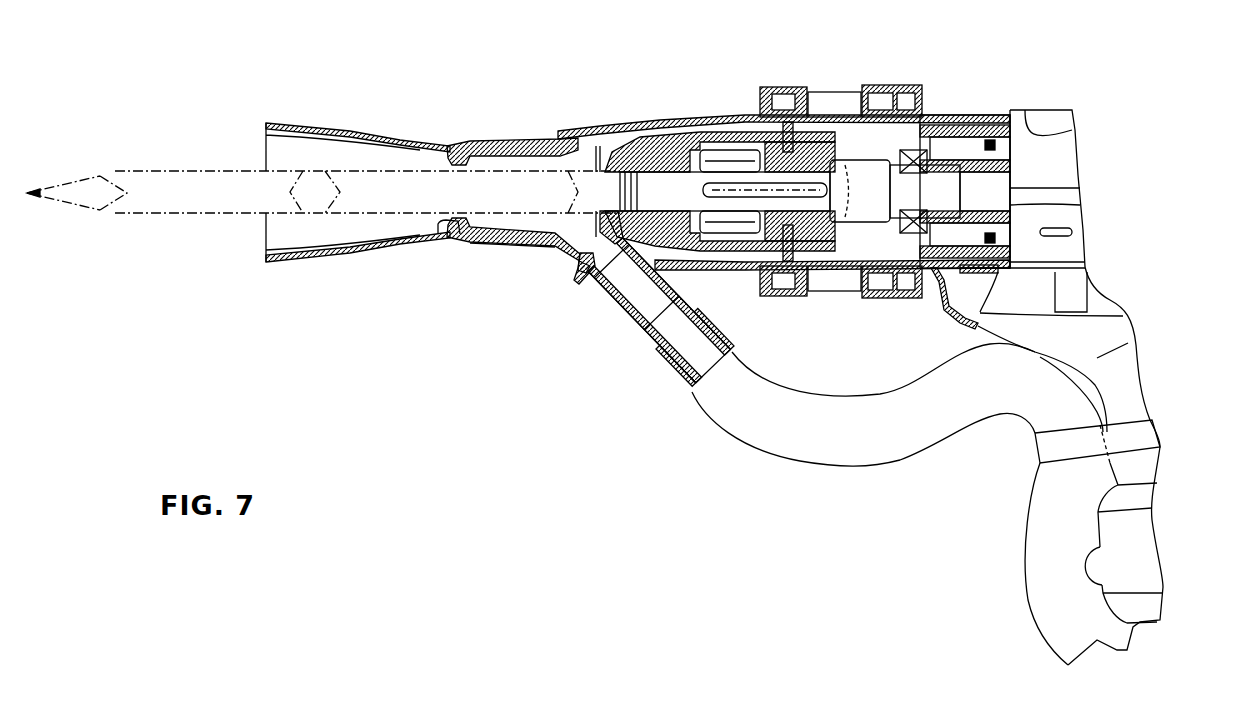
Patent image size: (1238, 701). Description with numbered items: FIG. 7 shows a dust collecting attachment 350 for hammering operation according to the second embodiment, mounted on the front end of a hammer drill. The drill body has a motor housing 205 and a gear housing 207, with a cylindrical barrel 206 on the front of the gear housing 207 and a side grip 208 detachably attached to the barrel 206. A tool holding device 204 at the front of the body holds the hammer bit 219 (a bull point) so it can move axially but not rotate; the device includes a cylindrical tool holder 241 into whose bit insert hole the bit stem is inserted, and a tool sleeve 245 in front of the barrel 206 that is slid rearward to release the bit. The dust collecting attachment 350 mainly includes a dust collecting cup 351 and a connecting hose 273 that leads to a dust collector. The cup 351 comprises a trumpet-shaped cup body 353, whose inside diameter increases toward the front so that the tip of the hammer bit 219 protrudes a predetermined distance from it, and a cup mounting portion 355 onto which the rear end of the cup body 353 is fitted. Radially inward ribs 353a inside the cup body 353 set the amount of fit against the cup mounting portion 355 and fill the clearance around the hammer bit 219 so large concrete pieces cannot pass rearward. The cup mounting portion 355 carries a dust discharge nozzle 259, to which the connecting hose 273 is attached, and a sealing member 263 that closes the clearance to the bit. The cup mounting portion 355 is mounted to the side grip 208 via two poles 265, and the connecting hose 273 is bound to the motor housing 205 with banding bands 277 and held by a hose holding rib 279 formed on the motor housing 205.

The hammer bit 219 is at (223, 178).
The cup body 353 is at (401, 142).
The rib 353a is at (439, 229).
The dust collecting cup 351 is at (499, 142).
The dust collecting attachment 350 is at (522, 258).
The cup mounting portion 355 is at (632, 120).
The tool holding device 204 is at (715, 134).
The tool holder 241 is at (790, 262).
The tool sleeve 245 is at (793, 128).
The pole 265 is at (828, 92).
The side grip 208 is at (888, 84).
The barrel 206 is at (965, 113).
The gear housing 207 is at (1047, 115).
The motor housing 205 is at (1128, 355).
The banding band 277 is at (1045, 450).
The hose holding rib 279 is at (1087, 567).
The connecting hose 273 is at (799, 452).
The dust discharge nozzle 259 is at (601, 310).
The sealing member 263 is at (597, 220).